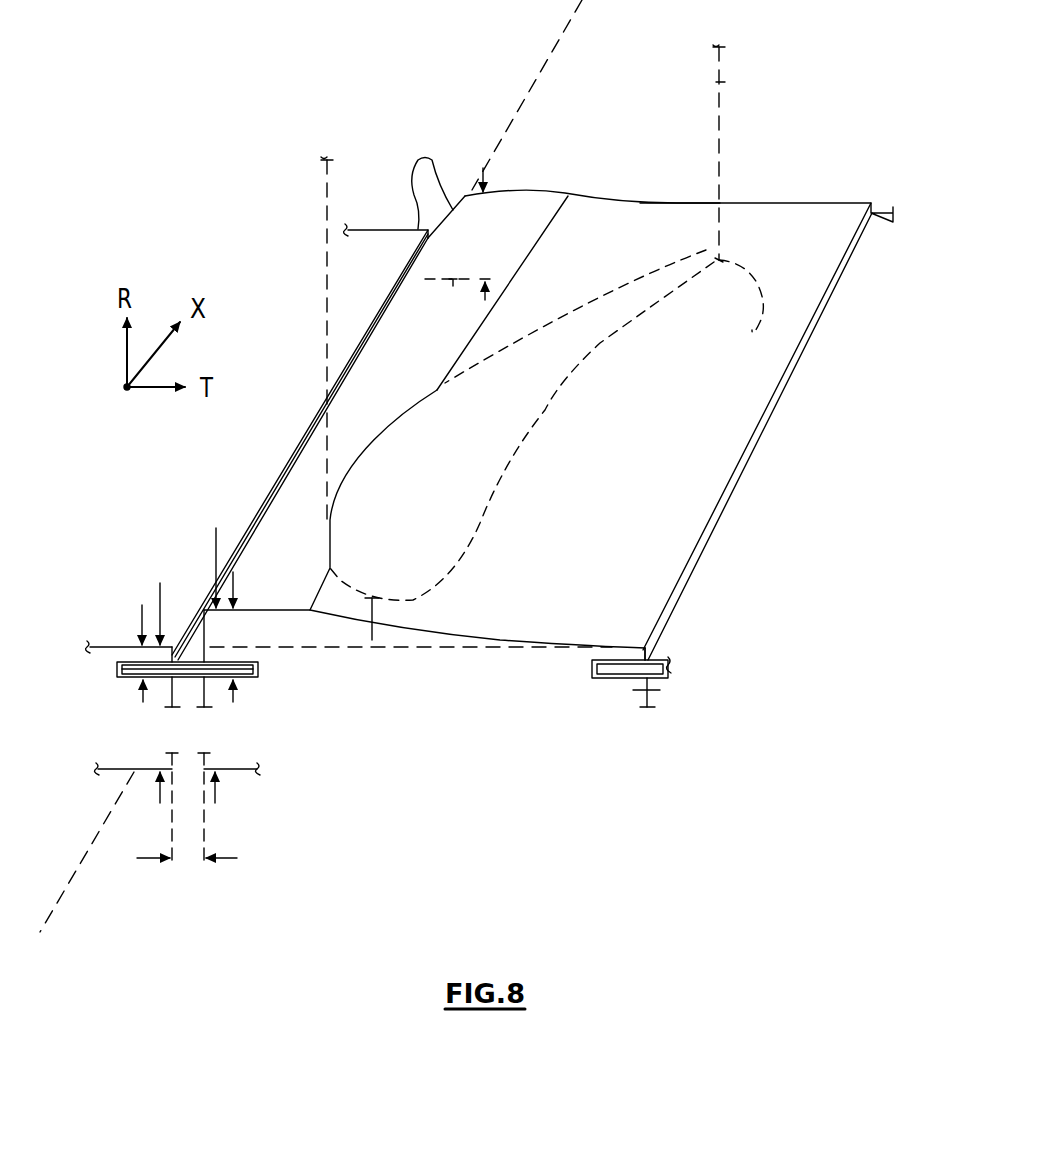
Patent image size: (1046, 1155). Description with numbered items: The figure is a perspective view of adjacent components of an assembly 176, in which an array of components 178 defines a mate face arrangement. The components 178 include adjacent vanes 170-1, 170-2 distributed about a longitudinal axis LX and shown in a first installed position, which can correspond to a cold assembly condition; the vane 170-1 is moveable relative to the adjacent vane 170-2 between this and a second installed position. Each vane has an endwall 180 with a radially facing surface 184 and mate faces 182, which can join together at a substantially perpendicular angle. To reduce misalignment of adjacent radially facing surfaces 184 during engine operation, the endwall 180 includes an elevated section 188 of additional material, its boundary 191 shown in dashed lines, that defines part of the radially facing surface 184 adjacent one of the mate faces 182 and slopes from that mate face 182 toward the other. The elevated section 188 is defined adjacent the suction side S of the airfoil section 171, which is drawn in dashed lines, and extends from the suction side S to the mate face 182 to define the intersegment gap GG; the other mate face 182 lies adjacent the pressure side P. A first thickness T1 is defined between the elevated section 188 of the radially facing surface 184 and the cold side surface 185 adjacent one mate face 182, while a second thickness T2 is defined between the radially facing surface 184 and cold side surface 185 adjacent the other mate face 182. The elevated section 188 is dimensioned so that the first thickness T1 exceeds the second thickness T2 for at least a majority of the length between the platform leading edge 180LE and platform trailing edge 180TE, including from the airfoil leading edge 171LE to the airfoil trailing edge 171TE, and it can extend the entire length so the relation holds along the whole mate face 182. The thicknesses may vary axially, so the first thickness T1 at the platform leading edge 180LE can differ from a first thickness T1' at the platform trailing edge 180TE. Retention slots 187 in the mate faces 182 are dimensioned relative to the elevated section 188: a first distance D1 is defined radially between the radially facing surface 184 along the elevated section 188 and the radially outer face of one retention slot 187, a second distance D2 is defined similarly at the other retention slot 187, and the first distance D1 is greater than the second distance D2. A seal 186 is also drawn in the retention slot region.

The assembly 176 is at (215, 82).
The vane 170-1 is at (390, 228).
The vane 170-2 is at (782, 200).
The airfoil section 171 is at (722, 82).
The airfoil trailing edge 171TE is at (757, 327).
The airfoil leading edge 171LE is at (372, 640).
The components 178 is at (442, 184).
The endwall 180 is at (650, 692).
The platform trailing edge 180TE is at (697, 203).
The platform leading edge 180LE is at (627, 655).
The mate face 182 is at (187, 690).
The radially facing surface 184 is at (122, 643).
The cold side surface 185 is at (457, 285).
The seal 186 is at (248, 667).
The retention slot 187 is at (118, 670).
The elevated section 188 is at (280, 594).
The boundary 191 is at (420, 650).
The suction side S is at (530, 332).
The pressure side P is at (533, 413).
The longitudinal axis LX is at (48, 912).
The intersegment gap GG is at (237, 858).
The first thickness T1 is at (191, 550).
The first thickness T1' is at (515, 173).
The second thickness T2 is at (160, 583).
The first distance D1 is at (233, 572).
The second distance D2 is at (142, 605).